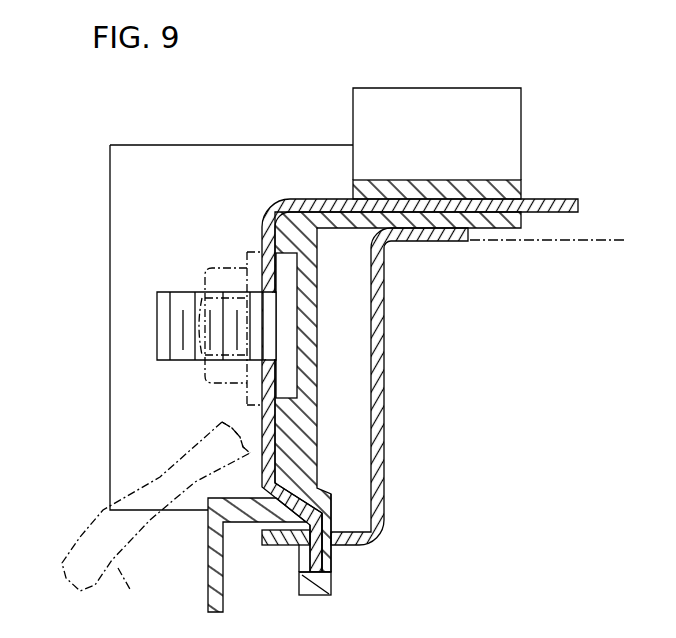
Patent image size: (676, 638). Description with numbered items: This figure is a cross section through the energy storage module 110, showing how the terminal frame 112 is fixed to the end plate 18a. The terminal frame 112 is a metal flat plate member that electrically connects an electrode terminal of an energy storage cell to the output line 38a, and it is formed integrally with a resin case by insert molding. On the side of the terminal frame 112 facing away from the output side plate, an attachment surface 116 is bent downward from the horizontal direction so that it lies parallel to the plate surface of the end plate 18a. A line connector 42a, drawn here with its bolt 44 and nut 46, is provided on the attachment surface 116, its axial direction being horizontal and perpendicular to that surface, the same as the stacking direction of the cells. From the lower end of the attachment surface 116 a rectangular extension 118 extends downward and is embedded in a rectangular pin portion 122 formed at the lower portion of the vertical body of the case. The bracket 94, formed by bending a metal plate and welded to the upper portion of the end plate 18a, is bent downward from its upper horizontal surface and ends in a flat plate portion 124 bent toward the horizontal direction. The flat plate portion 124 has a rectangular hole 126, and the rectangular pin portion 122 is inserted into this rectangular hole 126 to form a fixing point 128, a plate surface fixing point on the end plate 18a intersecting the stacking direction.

The energy storage module 110 is at (331, 63).
The terminal frame 112 is at (315, 198).
The end plate 18a is at (607, 237).
The bracket 94 is at (387, 306).
The line connector 42a is at (216, 296).
The bolt 44 is at (180, 300).
The nut 46 is at (222, 268).
The attachment surface 116 is at (260, 432).
The output line 38a is at (156, 519).
The flat plate portion 124 is at (262, 540).
The rectangular extension 118 is at (310, 568).
The rectangular hole 126 is at (302, 541).
The rectangular pin portion 122 is at (323, 587).
The fixing point 128 is at (376, 557).